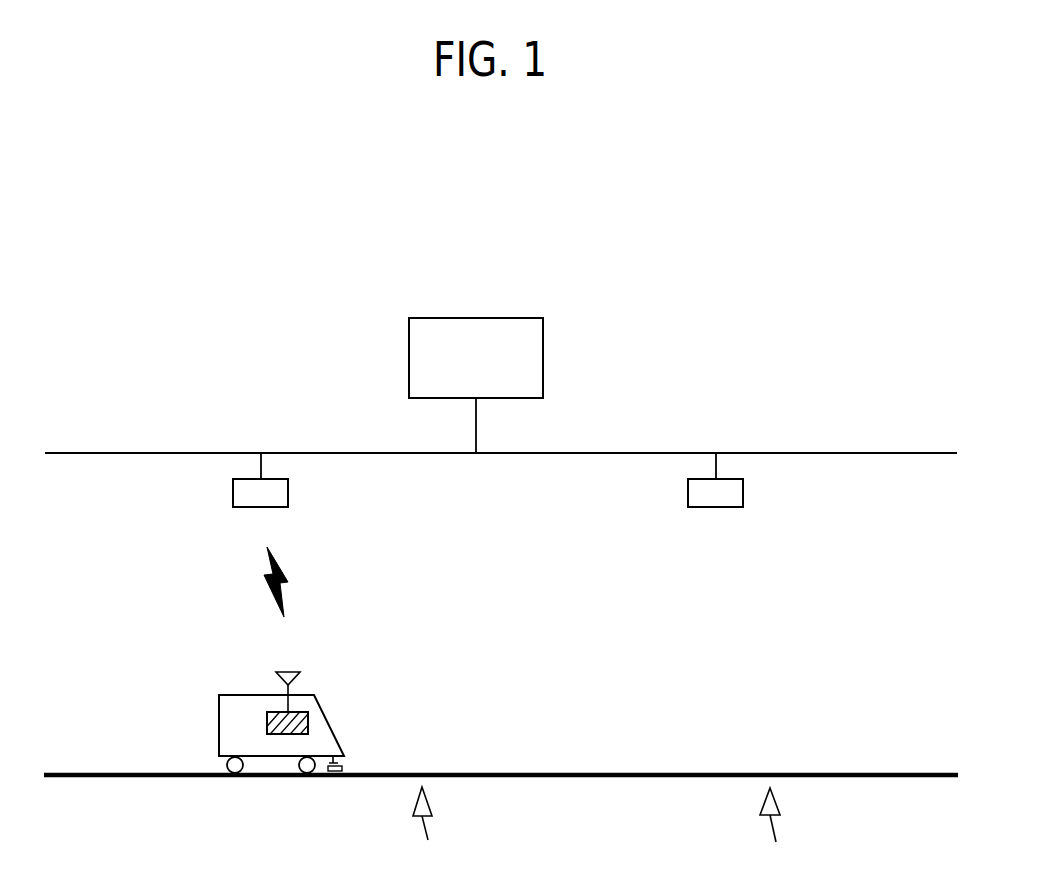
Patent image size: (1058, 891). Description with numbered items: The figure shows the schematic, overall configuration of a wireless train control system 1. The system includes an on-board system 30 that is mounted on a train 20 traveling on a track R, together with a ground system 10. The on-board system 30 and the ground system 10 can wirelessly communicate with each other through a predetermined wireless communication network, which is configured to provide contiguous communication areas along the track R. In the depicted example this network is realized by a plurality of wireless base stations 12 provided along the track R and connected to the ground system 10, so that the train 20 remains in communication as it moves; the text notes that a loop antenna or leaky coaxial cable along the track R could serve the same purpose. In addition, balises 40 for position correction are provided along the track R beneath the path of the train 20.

The wireless train control system 1 is at (696, 259).
The ground system 10 is at (435, 318).
The wireless base station 12 is at (288, 492).
The train 20 is at (219, 710).
The on-board system 30 is at (309, 724).
The balise 40 is at (600, 829).
The track R is at (633, 772).